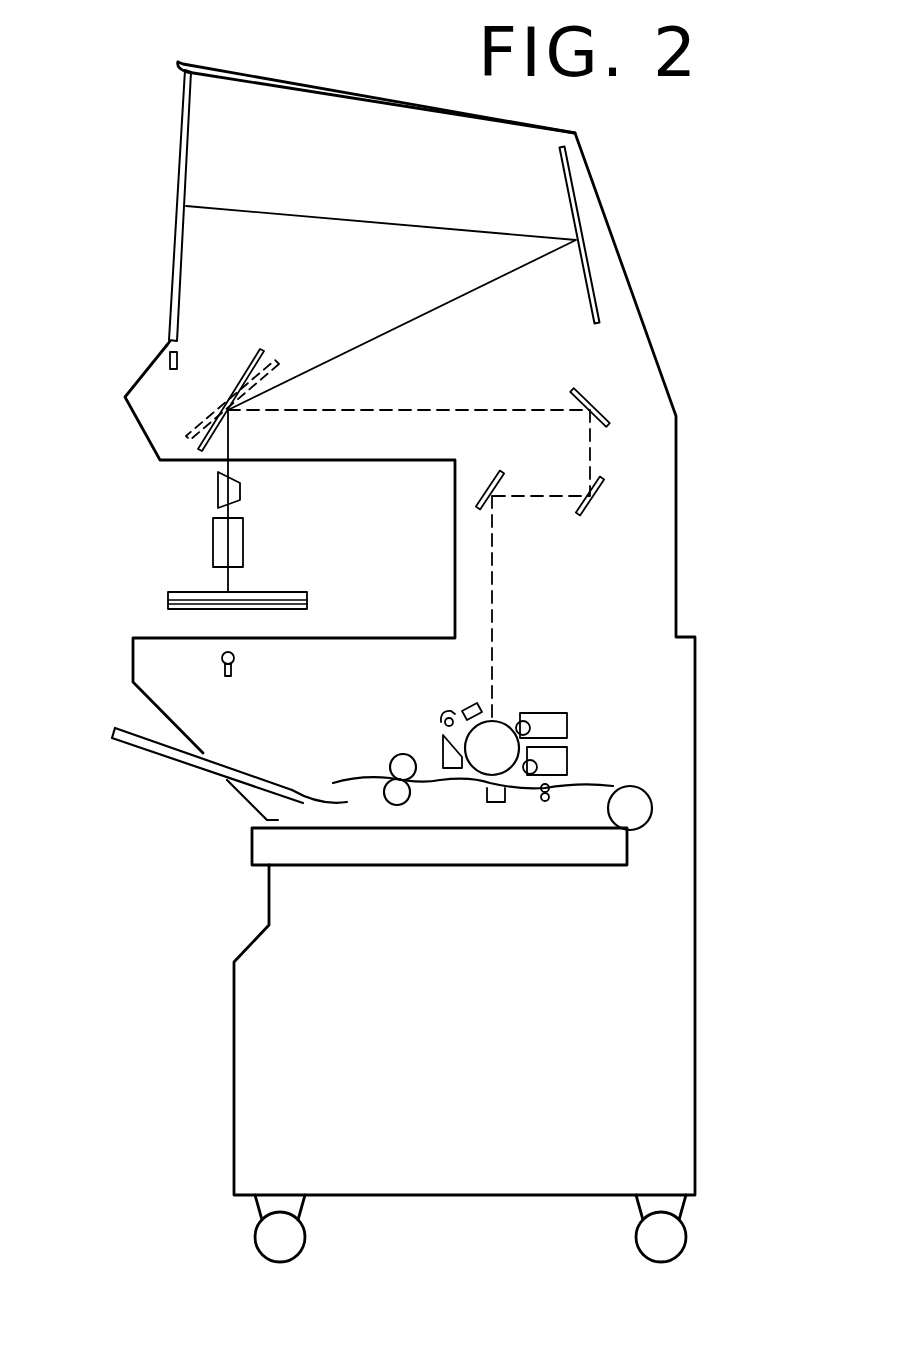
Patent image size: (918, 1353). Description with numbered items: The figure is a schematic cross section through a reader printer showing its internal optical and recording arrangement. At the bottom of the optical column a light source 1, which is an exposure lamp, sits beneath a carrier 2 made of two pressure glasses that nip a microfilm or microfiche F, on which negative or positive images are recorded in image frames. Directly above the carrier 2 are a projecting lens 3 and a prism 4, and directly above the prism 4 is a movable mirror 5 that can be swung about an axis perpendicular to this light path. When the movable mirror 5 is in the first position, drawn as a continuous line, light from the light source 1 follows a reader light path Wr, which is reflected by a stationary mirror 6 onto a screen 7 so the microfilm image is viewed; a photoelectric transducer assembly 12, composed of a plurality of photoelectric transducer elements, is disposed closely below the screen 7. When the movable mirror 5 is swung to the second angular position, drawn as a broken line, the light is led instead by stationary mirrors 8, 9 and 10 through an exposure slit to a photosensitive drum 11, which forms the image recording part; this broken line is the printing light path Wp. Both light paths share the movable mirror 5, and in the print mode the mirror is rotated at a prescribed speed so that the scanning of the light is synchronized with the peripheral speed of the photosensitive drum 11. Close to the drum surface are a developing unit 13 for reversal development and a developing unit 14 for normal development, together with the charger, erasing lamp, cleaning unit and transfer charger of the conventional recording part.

The light source 1 is at (238, 660).
The carrier 2 is at (293, 596).
The projecting lens 3 is at (210, 546).
The prism 4 is at (215, 488).
The movable mirror 5 is at (232, 374).
The stationary mirror 6 is at (598, 283).
The screen 7 is at (185, 172).
The stationary mirror 8 is at (598, 403).
The stationary mirror 9 is at (604, 500).
The stationary mirror 10 is at (496, 481).
The photosensitive drum 11 is at (498, 740).
The photoelectric transducer assembly 12 is at (150, 370).
The developing unit 13 is at (569, 761).
The developing unit 14 is at (569, 724).
The microfilm F is at (185, 608).
The reader light path Wr is at (342, 218).
The printing light path Wp is at (497, 614).